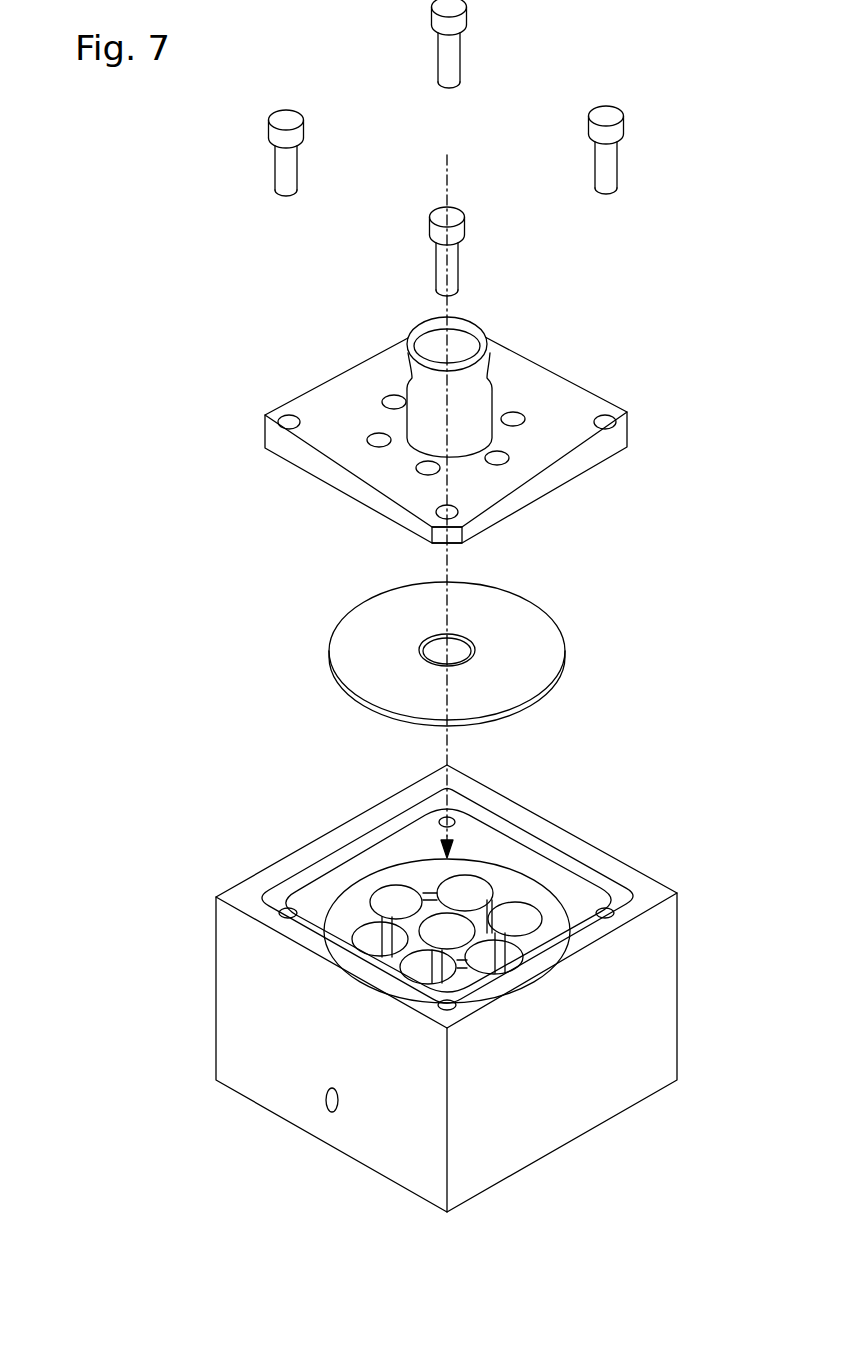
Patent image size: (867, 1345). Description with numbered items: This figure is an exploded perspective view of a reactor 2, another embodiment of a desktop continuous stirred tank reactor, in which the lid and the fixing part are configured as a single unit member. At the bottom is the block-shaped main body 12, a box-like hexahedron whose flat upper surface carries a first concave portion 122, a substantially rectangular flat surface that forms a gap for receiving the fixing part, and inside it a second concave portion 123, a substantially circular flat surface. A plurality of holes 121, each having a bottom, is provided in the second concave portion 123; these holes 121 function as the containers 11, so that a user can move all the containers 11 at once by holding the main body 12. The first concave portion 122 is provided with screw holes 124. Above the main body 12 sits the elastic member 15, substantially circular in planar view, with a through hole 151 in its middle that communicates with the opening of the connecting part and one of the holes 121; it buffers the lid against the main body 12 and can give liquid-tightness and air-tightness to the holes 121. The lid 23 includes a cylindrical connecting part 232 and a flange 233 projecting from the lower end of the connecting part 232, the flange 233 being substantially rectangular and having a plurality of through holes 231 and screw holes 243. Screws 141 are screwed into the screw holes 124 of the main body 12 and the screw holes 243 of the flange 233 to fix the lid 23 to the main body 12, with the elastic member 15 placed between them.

The reactor 2 is at (771, 75).
The screws 141 is at (463, 53).
The lid 23 is at (449, 412).
The through holes 231 is at (392, 393).
The cylindrical connecting part 232 is at (472, 397).
The flange 233 is at (348, 390).
The screw holes 243 is at (285, 415).
The elastic member 15 is at (466, 651).
The through hole 151 is at (450, 632).
The main body 12 is at (500, 988).
The first concave portion 122 is at (525, 843).
The second concave portion 123 is at (550, 892).
The screw holes 124 is at (452, 820).
The containers 11 is at (457, 967).
The holes 121 is at (568, 1029).